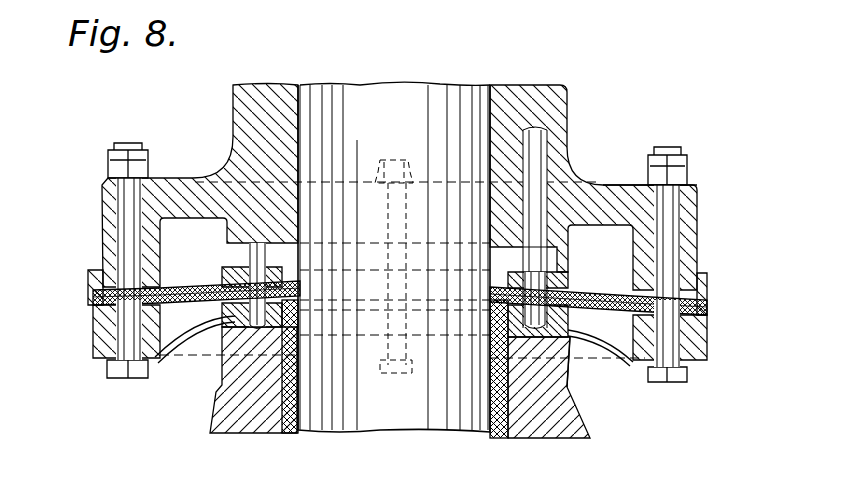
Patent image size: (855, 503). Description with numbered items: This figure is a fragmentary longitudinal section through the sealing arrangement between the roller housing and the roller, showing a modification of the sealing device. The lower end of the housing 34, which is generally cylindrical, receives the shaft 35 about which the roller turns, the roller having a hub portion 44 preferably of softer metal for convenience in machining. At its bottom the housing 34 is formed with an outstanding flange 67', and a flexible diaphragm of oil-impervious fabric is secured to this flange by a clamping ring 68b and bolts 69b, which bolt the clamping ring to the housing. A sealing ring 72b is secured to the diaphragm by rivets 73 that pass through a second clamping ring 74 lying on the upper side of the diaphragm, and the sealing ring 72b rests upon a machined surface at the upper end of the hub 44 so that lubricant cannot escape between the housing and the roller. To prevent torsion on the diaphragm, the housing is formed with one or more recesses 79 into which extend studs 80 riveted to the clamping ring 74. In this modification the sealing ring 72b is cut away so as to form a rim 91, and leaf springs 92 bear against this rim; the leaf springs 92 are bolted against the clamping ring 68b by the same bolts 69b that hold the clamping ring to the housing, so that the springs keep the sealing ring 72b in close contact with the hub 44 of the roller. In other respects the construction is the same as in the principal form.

The lower end of the housing 34 is at (567, 104).
The shaft 35 is at (462, 418).
The hub portion 44 is at (252, 425).
The outstanding flange 67' is at (650, 147).
The clamping ring 68b is at (104, 348).
The bolts 69b is at (123, 222).
The sealing ring 72b is at (537, 338).
The rivets 73 is at (238, 270).
The clamping ring 74 is at (562, 271).
The recesses 79 is at (537, 140).
The studs 80 is at (540, 180).
The rim 91 is at (200, 352).
The leaf springs 92 is at (155, 328).